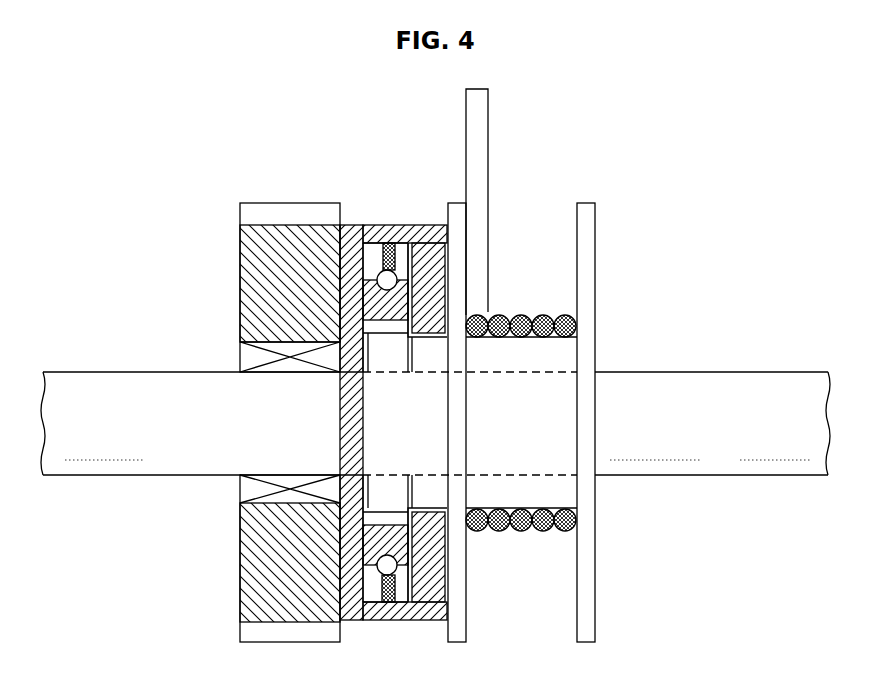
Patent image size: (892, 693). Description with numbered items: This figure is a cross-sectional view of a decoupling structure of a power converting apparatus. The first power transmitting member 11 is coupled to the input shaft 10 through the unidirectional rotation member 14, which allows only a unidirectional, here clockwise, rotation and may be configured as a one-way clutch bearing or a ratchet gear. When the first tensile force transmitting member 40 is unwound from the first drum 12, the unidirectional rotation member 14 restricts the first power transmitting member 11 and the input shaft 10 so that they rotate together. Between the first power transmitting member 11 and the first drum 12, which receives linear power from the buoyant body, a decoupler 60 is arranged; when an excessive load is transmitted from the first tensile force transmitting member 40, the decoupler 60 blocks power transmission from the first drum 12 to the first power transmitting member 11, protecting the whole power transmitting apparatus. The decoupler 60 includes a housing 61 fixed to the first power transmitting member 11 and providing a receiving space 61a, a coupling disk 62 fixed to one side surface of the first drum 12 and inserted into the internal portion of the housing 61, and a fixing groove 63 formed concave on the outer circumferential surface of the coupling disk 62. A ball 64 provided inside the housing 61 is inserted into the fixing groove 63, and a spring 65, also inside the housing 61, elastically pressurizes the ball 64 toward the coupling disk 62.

The input shaft 10 is at (725, 380).
The first power transmitting member 11 is at (245, 288).
The first drum 12 is at (588, 258).
The unidirectional rotation member 14 is at (245, 357).
The first tensile force transmitting member 40 is at (483, 112).
The decoupler 60 is at (380, 182).
The housing 61 is at (350, 225).
The receiving space 61a is at (404, 243).
The coupling disk 62 is at (340, 504).
The fixing groove 63 is at (440, 602).
The ball 64 is at (383, 615).
The spring 65 is at (397, 610).